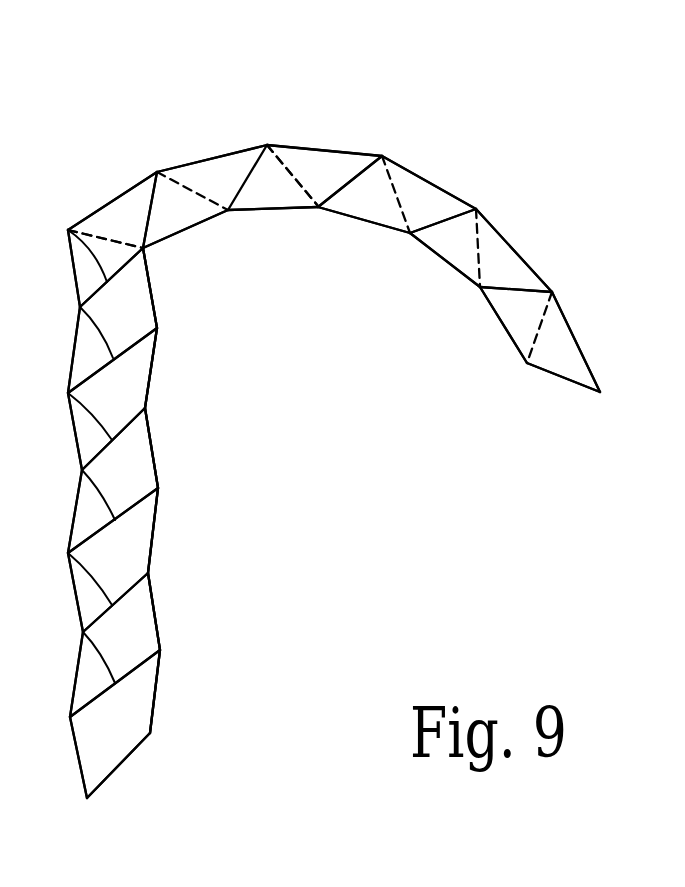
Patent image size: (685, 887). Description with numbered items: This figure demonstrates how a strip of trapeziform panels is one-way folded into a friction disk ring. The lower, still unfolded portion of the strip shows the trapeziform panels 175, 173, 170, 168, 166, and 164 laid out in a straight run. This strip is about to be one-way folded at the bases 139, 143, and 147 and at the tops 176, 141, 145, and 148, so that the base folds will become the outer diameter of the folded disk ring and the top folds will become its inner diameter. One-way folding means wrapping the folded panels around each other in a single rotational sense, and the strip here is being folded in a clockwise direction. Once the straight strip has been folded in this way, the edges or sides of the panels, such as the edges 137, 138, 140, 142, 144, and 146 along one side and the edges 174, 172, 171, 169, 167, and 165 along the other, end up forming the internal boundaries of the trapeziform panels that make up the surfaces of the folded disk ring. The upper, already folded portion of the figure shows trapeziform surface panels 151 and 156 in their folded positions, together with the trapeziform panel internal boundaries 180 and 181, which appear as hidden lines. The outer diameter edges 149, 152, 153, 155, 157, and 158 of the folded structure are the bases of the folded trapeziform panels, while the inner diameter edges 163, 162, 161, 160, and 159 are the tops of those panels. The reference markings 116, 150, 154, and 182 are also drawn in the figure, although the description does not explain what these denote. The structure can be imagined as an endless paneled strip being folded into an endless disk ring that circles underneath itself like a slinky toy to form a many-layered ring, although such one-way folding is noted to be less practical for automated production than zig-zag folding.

The fold line 116 is at (53, 256).
The panel edge 137 is at (75, 753).
The panel edge 138 is at (72, 693).
The base 139 is at (80, 657).
The panel edge 140 is at (79, 607).
The top 141 is at (72, 577).
The panel edge 142 is at (70, 527).
The base 143 is at (82, 482).
The panel edge 144 is at (70, 433).
The top 145 is at (68, 393).
The panel edge 146 is at (72, 350).
The base 147 is at (80, 312).
The top 148 is at (68, 230).
The outer diameter edge 149 is at (106, 203).
The fold line 150 is at (108, 233).
The trapeziform surface panel 151 is at (170, 200).
The outer diameter edge 152 is at (225, 152).
The outer diameter edge 153 is at (330, 147).
The fold line 154 is at (305, 188).
The outer diameter edge 155 is at (435, 187).
The trapeziform surface panel 156 is at (422, 205).
The outer diameter edge 157 is at (517, 250).
The outer diameter edge 158 is at (578, 340).
The inner diameter edge 159 is at (500, 322).
The inner diameter edge 160 is at (443, 258).
The inner diameter edge 161 is at (372, 222).
The inner diameter edge 162 is at (250, 212).
The inner diameter edge 163 is at (205, 221).
The trapeziform panel 164 is at (135, 288).
The panel edge 165 is at (157, 303).
The trapeziform panel 166 is at (132, 362).
The panel edge 167 is at (150, 384).
The trapeziform panel 168 is at (133, 448).
The panel edge 169 is at (157, 472).
The trapeziform panel 170 is at (127, 531).
The panel edge 171 is at (152, 544).
The panel edge 172 is at (153, 590).
The trapeziform panel 173 is at (133, 630).
The panel edge 174 is at (162, 672).
The trapeziform panel 175 is at (120, 718).
The top 176 is at (120, 763).
The trapeziform panel internal boundary 180 is at (248, 168).
The trapeziform panel internal boundary 181 is at (520, 290).
The fold line 182 is at (540, 372).